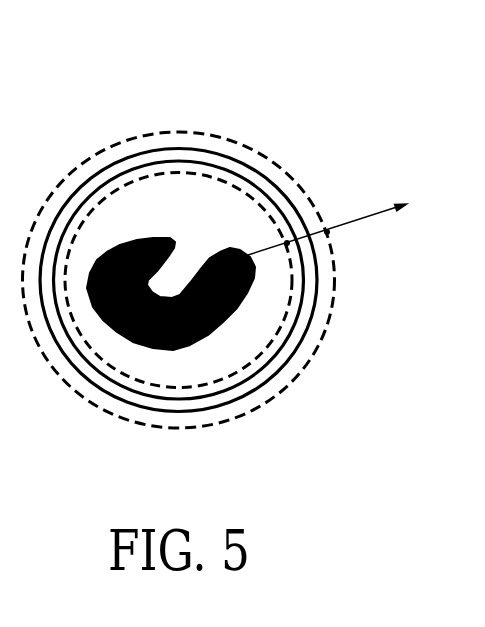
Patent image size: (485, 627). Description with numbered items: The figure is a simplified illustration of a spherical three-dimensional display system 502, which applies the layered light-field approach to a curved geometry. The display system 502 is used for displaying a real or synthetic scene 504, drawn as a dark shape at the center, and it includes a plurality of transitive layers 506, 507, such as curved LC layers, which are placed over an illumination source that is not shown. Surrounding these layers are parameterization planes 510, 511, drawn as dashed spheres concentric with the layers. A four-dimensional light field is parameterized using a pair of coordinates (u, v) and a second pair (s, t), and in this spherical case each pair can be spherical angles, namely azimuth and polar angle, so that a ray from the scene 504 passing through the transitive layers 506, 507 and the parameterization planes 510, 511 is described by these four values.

The spherical 3D display system 502 is at (228, 95).
The real or synthetic scene 504 is at (200, 343).
The transitive layer 506 is at (305, 280).
The transitive layer 507 is at (305, 333).
The parameterization plane 510 is at (102, 162).
The parameterization plane 511 is at (165, 175).